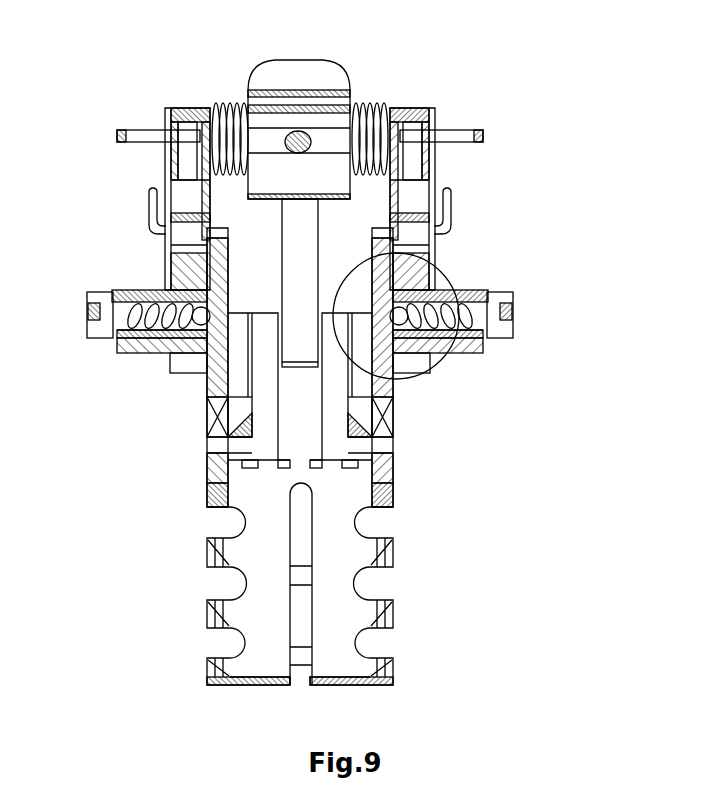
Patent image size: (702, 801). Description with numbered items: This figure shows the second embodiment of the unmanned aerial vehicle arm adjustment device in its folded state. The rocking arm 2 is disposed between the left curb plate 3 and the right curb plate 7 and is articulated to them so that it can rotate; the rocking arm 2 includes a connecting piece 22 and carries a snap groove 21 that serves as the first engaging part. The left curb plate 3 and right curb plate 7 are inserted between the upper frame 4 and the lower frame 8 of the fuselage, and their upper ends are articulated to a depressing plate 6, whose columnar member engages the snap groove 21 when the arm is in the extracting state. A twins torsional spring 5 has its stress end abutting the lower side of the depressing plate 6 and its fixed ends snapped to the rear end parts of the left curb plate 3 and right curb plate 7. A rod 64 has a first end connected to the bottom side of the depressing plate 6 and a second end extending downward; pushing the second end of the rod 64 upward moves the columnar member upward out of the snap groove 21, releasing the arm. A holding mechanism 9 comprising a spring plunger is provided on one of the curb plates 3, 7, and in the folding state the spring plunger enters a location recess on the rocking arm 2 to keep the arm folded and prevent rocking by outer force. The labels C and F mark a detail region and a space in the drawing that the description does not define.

The rocking arm 2 is at (337, 585).
The left curb plate 3 is at (185, 270).
The upper frame 4 is at (154, 133).
The twins torsional spring 5 is at (380, 108).
The depressing plate 6 is at (310, 105).
The right curb plate 7 is at (397, 298).
The lower frame 8 is at (146, 346).
The holding mechanism 9 is at (478, 320).
The snap groove 21 is at (393, 415).
The connecting piece 22 is at (380, 452).
The rod 64 is at (300, 347).
The detail circle C is at (452, 284).
The fluid chamber F is at (302, 401).